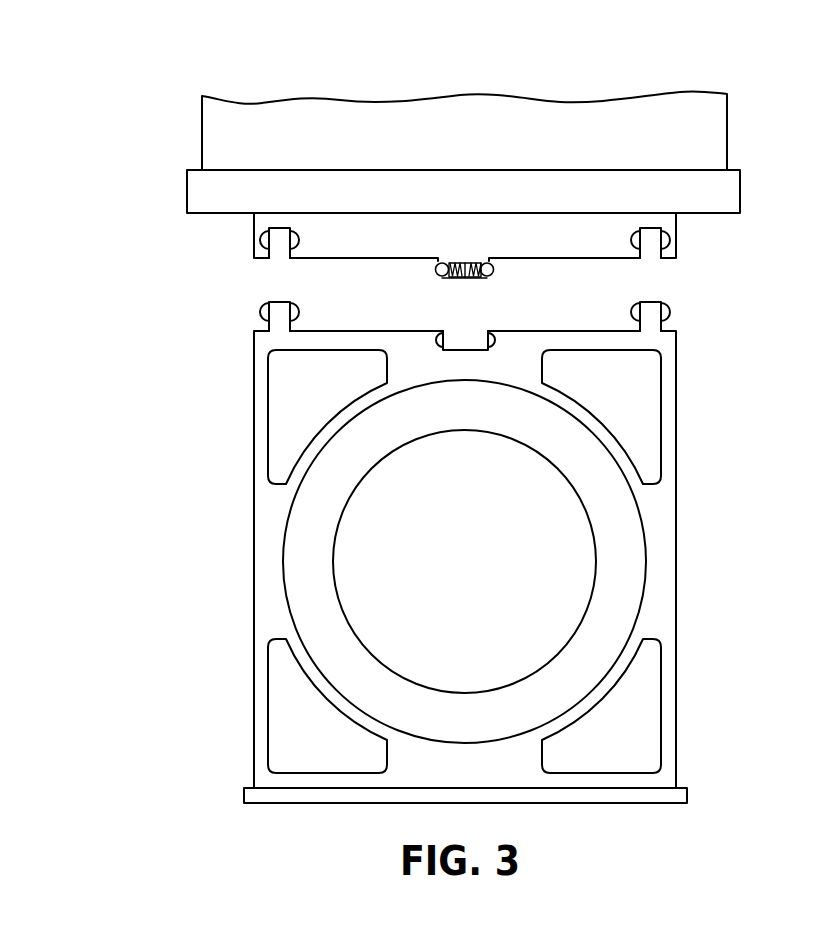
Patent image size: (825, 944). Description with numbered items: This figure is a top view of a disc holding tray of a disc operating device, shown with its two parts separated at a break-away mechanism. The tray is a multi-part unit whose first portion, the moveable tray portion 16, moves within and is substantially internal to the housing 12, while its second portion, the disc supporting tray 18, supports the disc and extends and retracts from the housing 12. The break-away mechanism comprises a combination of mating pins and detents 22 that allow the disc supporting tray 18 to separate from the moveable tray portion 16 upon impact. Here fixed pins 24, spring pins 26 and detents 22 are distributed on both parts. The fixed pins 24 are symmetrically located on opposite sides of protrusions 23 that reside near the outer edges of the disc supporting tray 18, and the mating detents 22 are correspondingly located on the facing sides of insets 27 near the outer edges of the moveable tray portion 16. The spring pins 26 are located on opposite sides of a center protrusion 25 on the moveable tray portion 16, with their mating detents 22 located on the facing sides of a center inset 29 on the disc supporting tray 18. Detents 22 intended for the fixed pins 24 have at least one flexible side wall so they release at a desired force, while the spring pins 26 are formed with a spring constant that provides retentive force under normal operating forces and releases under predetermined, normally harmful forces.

The housing 12 is at (202, 125).
The moveable tray portion 16 is at (678, 245).
The disc supporting tray 18 is at (679, 509).
The detents 22 is at (259, 238).
The protrusions 23 is at (280, 302).
The fixed pins 24 is at (260, 312).
The center protrusion 25 is at (470, 279).
The spring pins 26 is at (436, 266).
The insets 27 is at (280, 253).
The center inset 29 is at (472, 340).